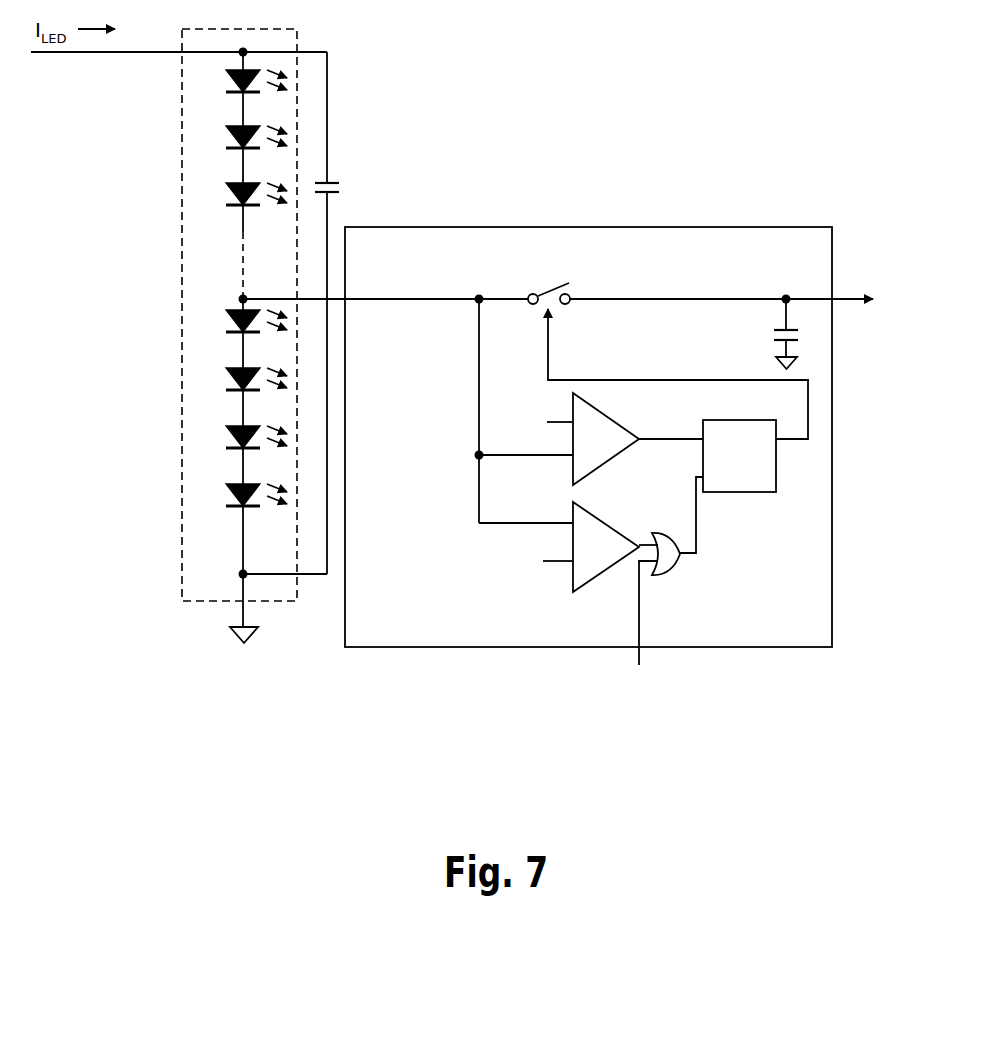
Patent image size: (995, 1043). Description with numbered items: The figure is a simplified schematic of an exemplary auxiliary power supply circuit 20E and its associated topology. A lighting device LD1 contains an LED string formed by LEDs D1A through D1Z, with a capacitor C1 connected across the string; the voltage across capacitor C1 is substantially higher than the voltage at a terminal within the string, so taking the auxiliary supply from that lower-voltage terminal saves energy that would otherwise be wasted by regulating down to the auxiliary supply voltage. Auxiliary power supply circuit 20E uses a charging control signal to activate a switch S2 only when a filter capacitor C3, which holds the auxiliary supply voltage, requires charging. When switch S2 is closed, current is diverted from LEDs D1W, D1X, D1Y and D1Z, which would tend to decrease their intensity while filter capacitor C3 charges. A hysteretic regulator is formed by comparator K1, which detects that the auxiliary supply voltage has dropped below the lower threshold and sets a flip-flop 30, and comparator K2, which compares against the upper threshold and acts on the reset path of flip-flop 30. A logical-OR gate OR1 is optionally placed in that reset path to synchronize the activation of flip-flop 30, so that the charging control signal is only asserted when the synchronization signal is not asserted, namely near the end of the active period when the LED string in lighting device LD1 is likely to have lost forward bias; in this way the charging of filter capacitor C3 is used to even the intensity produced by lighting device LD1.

The LED D1A is at (241, 93).
The LED D1W is at (239, 338).
The LED D1X is at (239, 394).
The LED D1Y is at (239, 453).
The LED D1Z is at (239, 506).
The lighting device LD1 is at (254, 336).
The capacitor C1 is at (340, 313).
The filter capacitor C3 is at (798, 334).
The switch S2 is at (549, 280).
The comparator K1 is at (600, 413).
The comparator K2 is at (600, 522).
The logical-OR gate OR1 is at (672, 571).
The flip-flop 30 is at (733, 419).
The auxiliary power supply circuit 20E is at (567, 642).